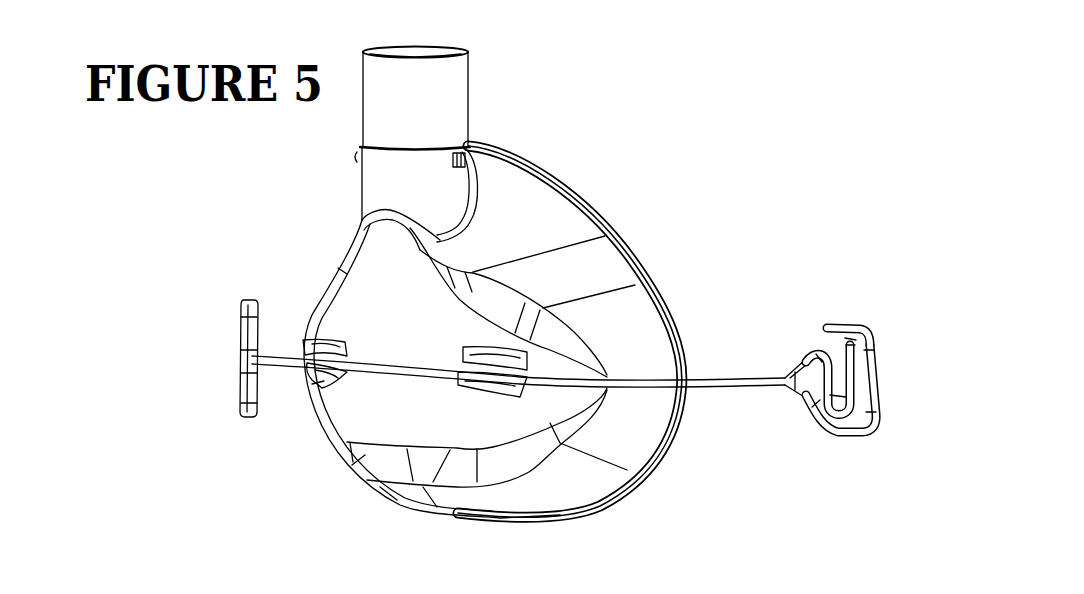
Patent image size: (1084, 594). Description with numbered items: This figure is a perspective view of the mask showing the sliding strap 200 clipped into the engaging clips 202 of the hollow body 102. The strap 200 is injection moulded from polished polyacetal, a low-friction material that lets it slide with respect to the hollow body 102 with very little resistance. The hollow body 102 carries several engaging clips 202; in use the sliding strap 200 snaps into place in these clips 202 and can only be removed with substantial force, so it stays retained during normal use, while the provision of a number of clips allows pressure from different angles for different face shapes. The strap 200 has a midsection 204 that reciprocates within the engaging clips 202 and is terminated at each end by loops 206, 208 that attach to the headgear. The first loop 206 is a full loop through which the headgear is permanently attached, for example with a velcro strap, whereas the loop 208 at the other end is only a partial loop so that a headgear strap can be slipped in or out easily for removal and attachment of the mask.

The hollow body 102 is at (380, 283).
The sliding strap 200 is at (737, 353).
The engaging clips 202 is at (417, 520).
The midsection 204 is at (381, 369).
The first loop 206 is at (236, 343).
The loop 208 is at (852, 320).